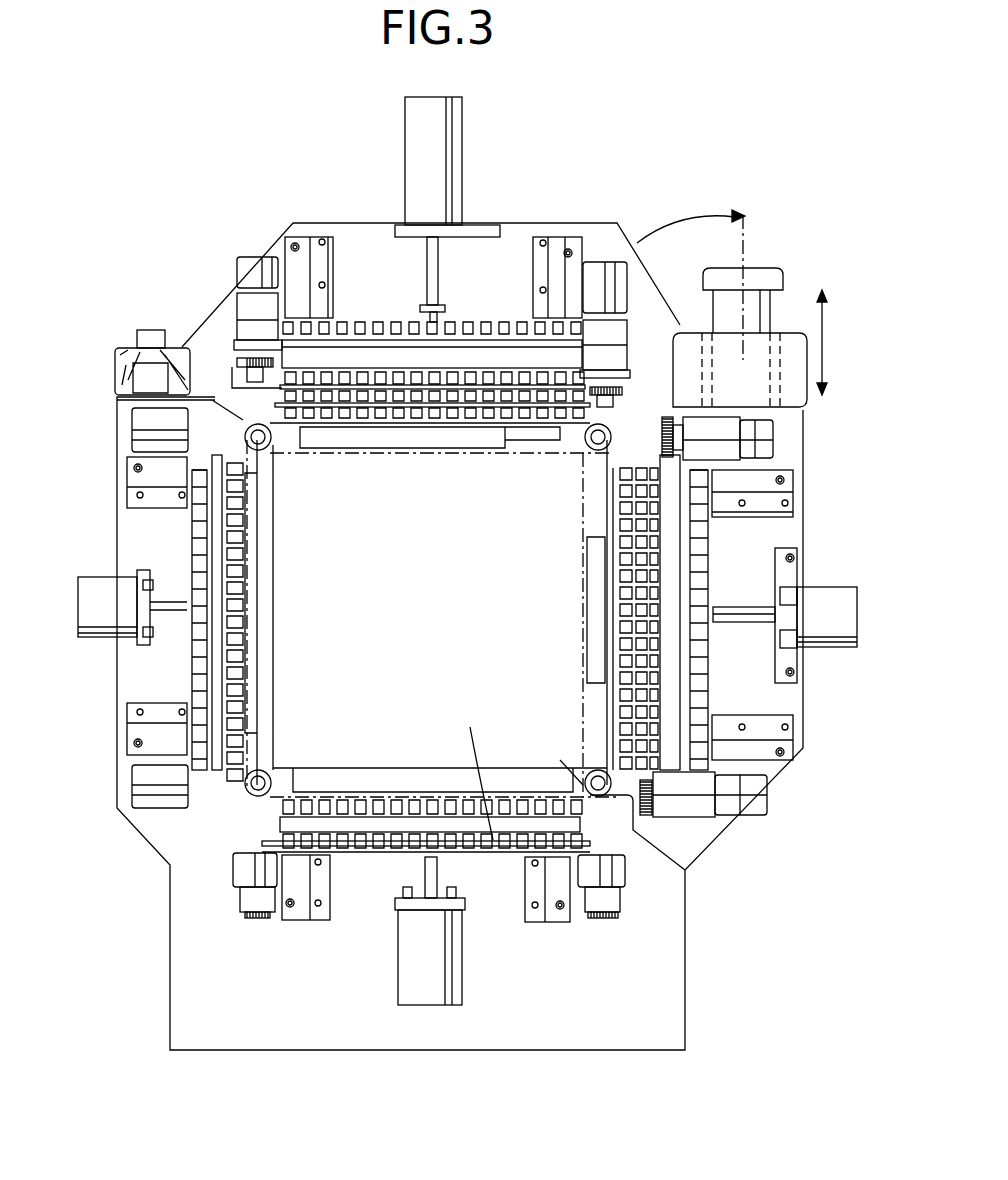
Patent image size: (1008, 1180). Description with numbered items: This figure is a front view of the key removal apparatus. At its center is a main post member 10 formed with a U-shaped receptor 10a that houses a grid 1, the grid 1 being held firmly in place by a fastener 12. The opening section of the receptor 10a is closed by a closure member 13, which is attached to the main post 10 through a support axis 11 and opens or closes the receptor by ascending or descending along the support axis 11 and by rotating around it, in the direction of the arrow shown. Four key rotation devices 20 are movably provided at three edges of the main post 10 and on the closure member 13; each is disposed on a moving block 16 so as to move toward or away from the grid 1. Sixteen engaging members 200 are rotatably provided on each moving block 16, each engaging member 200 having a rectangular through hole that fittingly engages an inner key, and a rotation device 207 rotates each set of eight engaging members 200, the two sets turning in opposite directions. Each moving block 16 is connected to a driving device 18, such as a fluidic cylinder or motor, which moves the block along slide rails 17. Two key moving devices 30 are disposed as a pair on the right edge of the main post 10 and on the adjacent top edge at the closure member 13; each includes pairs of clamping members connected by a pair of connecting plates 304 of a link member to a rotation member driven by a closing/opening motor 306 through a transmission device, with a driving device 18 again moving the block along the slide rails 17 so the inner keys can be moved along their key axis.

The grid 1 is at (493, 840).
The main post member 10 is at (663, 952).
The U-shaped receptor 10a is at (570, 783).
The support axis 11 is at (763, 313).
The fastener 12 is at (143, 337).
The closure member 13 is at (640, 297).
The moving block 16 is at (385, 357).
The slide rails 17 is at (332, 250).
The driving device 18 is at (447, 135).
The key rotation device 20 is at (508, 312).
The key moving device 30 is at (338, 430).
The engaging member 200 is at (367, 320).
The rotation device 207 is at (247, 270).
The connecting plates 304 is at (300, 317).
The closing/opening motor 306 is at (247, 332).